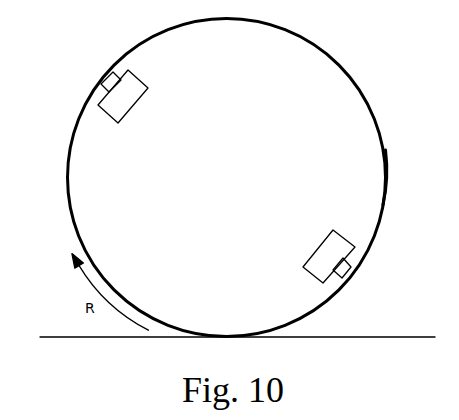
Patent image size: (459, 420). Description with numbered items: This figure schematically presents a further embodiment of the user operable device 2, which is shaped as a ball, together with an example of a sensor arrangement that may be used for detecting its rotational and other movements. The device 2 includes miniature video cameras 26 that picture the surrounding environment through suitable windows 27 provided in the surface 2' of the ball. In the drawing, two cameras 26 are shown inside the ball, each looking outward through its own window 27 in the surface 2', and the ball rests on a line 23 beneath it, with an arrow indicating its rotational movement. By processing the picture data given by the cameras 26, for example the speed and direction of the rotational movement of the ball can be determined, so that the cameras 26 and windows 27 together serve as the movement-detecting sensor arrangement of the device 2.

The device 2 is at (227, 178).
The surface 2' is at (407, 168).
The ground surface 23 is at (358, 336).
The miniature video cameras 26 is at (108, 115).
The windows 27 is at (103, 84).